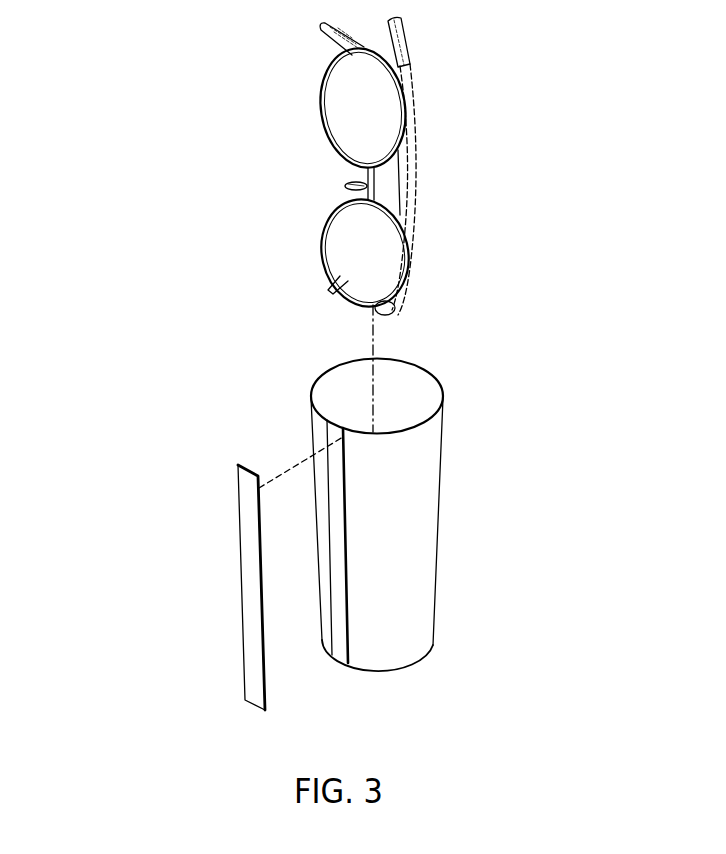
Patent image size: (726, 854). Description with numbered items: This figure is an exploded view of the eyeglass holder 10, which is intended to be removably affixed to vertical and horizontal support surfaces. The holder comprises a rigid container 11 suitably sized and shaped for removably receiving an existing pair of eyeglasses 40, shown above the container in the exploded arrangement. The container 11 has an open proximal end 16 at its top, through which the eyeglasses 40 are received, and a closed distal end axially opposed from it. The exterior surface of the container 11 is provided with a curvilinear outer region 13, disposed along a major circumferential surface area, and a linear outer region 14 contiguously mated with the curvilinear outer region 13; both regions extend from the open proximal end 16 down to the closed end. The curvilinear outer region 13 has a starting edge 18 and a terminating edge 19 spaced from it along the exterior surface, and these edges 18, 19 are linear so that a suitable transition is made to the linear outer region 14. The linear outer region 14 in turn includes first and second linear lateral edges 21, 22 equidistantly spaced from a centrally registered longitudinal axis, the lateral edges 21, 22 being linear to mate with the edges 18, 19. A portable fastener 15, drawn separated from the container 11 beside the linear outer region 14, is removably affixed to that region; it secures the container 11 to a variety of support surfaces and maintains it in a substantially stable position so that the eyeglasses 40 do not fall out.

The eyeglass holder 10 is at (608, 273).
The rigid container 11 is at (457, 457).
The curvilinear outer region 13 is at (407, 547).
The linear outer region 14 is at (342, 633).
The portable fastener 15 is at (233, 595).
The open proximal end 16 is at (327, 372).
The starting edge 18 is at (345, 492).
The terminating edge 19 is at (323, 432).
The first linear lateral edge 21 is at (345, 562).
The second linear lateral edge 22 is at (328, 537).
The eyeglasses 40 is at (423, 175).